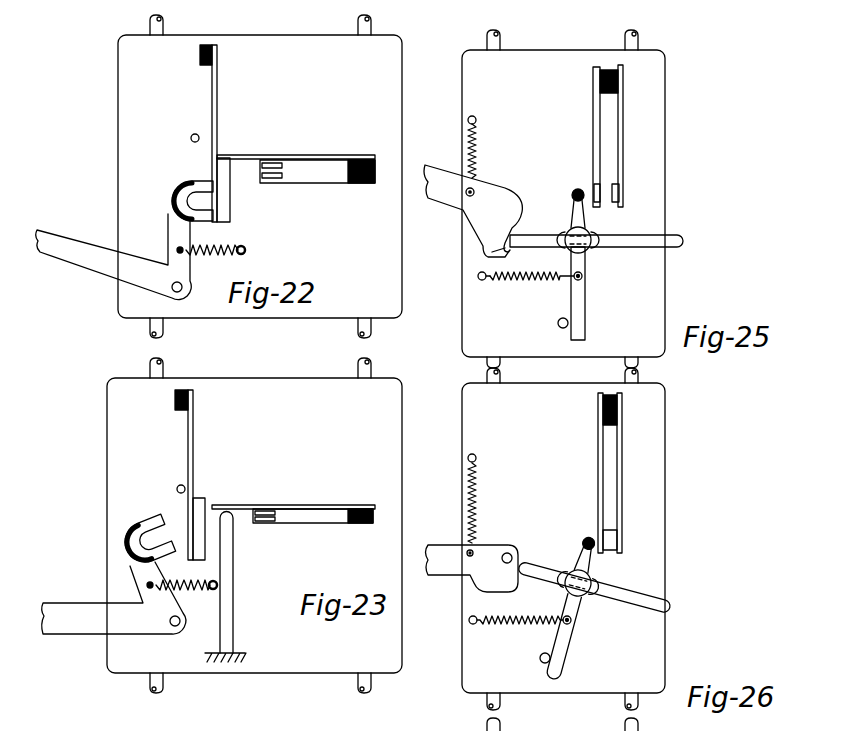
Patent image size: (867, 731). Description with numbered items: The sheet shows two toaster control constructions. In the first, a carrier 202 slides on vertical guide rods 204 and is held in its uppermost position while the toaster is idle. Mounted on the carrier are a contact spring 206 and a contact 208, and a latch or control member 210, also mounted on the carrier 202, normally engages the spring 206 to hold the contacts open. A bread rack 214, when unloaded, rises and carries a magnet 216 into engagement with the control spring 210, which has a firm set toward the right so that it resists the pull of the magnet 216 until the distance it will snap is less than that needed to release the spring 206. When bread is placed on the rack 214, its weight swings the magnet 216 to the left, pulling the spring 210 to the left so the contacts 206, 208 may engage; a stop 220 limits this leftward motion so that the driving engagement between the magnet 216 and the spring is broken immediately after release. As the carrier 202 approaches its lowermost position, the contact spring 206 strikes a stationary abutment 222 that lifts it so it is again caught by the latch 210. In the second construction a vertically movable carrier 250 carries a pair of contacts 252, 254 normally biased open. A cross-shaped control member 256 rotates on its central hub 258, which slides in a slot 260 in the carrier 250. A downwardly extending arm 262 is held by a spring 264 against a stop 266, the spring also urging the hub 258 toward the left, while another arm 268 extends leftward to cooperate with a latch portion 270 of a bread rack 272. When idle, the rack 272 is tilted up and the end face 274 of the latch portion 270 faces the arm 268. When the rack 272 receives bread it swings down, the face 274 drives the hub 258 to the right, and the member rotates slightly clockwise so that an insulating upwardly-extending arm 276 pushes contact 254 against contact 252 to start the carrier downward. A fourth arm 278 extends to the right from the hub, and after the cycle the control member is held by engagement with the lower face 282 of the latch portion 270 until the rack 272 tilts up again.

In FIG. 22, the carrier 202 is at (124, 84).
In FIG. 23, the carrier 202 is at (283, 664).
In FIG. 22, the vertical guide rods 204 is at (160, 26).
In FIG. 22, the contact spring 206 is at (264, 155).
In FIG. 23, the contact spring 206 is at (258, 506).
In FIG. 22, the contact 208 is at (284, 184).
In FIG. 22, the control member 210 is at (218, 94).
In FIG. 23, the control member 210 is at (194, 450).
In FIG. 22, the bread rack 214 is at (97, 270).
In FIG. 22, the magnet 216 is at (186, 181).
In FIG. 22, the stop 220 is at (190, 138).
In FIG. 23, the stationary abutment 222 is at (233, 642).
In FIG. 25, the carrier 250 is at (665, 113).
In FIG. 26, the carrier 250 is at (658, 475).
In FIG. 25, the contact 252 is at (623, 150).
In FIG. 25, the contact 254 is at (647, 137).
In FIG. 25, the cross-shaped control member 256 is at (658, 251).
In FIG. 25, the central hub 258 is at (598, 232).
In FIG. 25, the slot 260 is at (590, 250).
In FIG. 26, the slot 260 is at (598, 598).
In FIG. 25, the downwardly extending arm 262 is at (585, 312).
In FIG. 26, the downwardly extending arm 262 is at (565, 672).
In FIG. 25, the spring 264 is at (530, 284).
In FIG. 26, the spring 264 is at (512, 627).
In FIG. 25, the stop 266 is at (559, 325).
In FIG. 26, the stop 266 is at (540, 660).
In FIG. 25, the arm 268 is at (585, 213).
In FIG. 26, the arm 268 is at (535, 563).
In FIG. 25, the latch portion 270 is at (457, 259).
In FIG. 25, the bread rack 272 is at (440, 178).
In FIG. 26, the bread rack 272 is at (445, 565).
In FIG. 25, the end face 274 is at (448, 243).
In FIG. 25, the insulating upwardly-extending arm 276 is at (600, 210).
In FIG. 26, the insulating upwardly-extending arm 276 is at (597, 558).
In FIG. 25, the fourth arm 278 is at (596, 245).
In FIG. 25, the lower face 282 is at (491, 252).